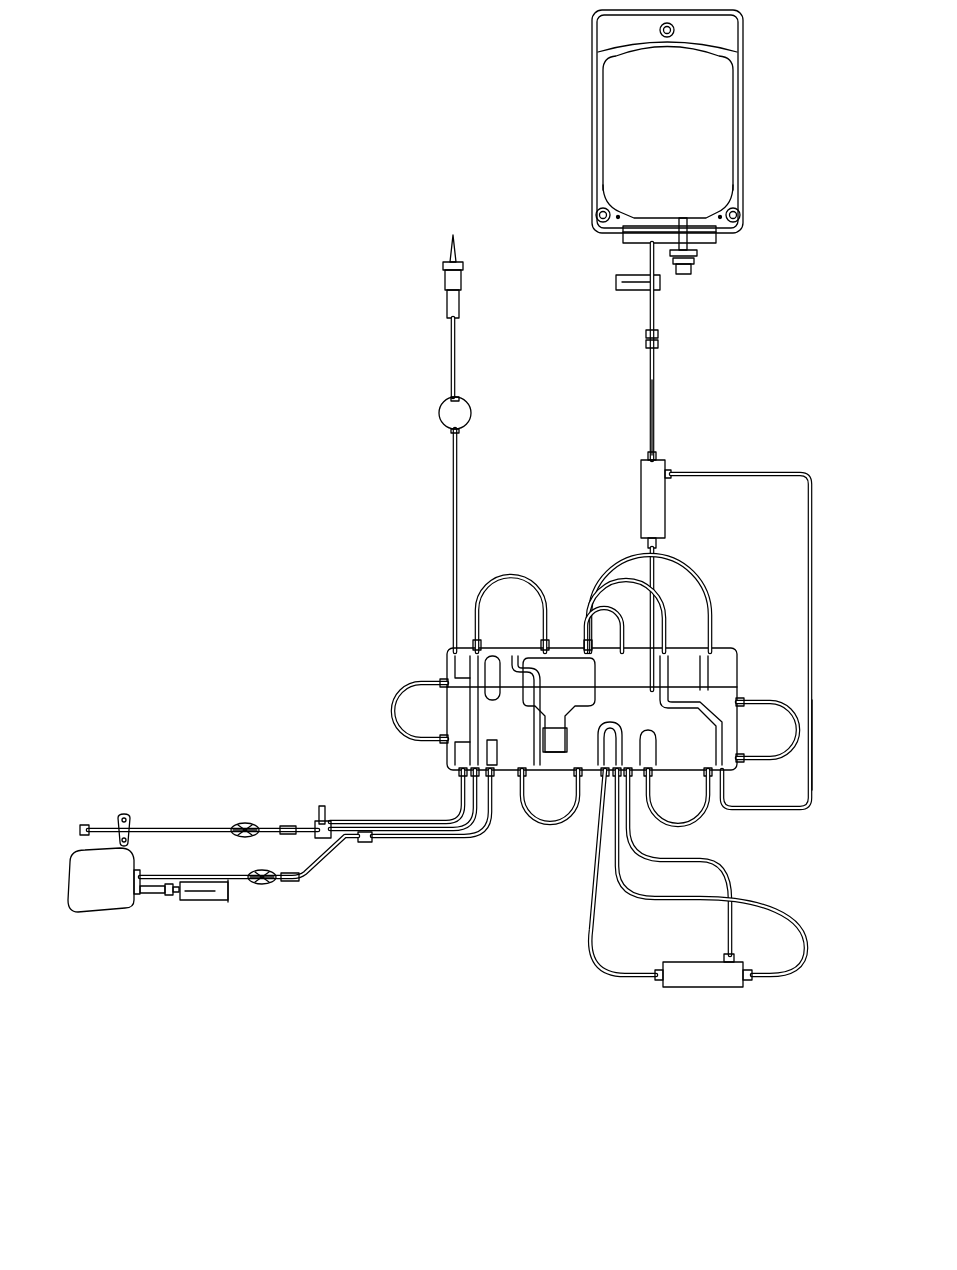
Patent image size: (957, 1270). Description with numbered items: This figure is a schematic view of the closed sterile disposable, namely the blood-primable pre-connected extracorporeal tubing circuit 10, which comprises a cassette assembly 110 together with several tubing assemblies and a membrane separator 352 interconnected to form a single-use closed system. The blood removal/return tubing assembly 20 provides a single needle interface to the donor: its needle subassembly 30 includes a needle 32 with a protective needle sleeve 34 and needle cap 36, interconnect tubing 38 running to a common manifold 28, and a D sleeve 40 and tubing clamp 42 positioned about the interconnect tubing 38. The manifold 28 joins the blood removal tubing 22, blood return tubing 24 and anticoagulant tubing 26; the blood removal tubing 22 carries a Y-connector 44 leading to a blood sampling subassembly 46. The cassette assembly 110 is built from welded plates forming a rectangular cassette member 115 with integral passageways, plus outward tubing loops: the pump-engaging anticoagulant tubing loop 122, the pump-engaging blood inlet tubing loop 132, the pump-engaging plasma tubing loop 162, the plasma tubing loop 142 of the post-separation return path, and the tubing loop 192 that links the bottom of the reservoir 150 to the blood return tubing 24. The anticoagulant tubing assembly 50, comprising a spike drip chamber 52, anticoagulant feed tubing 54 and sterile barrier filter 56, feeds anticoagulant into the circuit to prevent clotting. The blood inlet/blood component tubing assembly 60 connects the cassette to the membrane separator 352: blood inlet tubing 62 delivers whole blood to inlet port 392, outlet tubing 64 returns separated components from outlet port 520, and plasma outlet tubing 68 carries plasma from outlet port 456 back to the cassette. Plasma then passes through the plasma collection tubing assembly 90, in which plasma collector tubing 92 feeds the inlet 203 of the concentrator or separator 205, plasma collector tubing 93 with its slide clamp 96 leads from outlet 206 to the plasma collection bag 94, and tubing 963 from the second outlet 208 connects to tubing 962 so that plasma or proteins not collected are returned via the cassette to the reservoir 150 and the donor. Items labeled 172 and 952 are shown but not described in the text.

The extracorporeal tubing circuit 10 is at (178, 380).
The blood removal/return tubing assembly 20 is at (220, 692).
The blood removal tubing 22 is at (420, 838).
The blood return tubing 24 is at (445, 829).
The anticoagulant tubing 26 is at (452, 818).
The common manifold 28 is at (323, 810).
The needle subassembly 30 is at (190, 803).
The needle 32 is at (100, 826).
The protective needle sleeve 34 is at (88, 825).
The needle cap 36 is at (80, 832).
The interconnect tubing 38 is at (152, 895).
The D sleeve 40 is at (288, 827).
The tubing clamp 42 is at (246, 824).
The Y-connector 44 is at (367, 843).
The blood sampling subassembly 46 is at (207, 913).
The anticoagulant tubing assembly 50 is at (410, 280).
The spike drip chamber 52 is at (445, 288).
The anticoagulant feed tubing 54 is at (448, 492).
The sterile barrier filter 56 is at (438, 418).
The blood inlet/blood component tubing assembly 60 is at (820, 960).
The blood inlet tubing 62 is at (590, 955).
The outlet tubing 64 is at (783, 915).
The plasma outlet tubing 68 is at (730, 880).
The plasma collection tubing assembly 90 is at (678, 352).
The plasma collector tubing 92 is at (656, 584).
The plasma collector tubing 93 is at (648, 375).
The plasma collection bag 94 is at (743, 90).
The slide clamp 96 is at (612, 285).
The cassette assembly 110 is at (362, 730).
The cassette member 115 is at (447, 650).
The anticoagulant tubing loop 122 is at (400, 686).
The blood inlet tubing loop 132 is at (552, 826).
The plasma tubing loop 142 is at (792, 710).
The reservoir 150 is at (548, 690).
The plasma tubing loop 162 is at (680, 825).
The tubing loop 172 is at (590, 600).
The tubing loop 192 is at (480, 588).
The inlet 203 is at (657, 542).
The concentrator or separator 205 is at (641, 500).
The outlet 206 is at (658, 455).
The second outlet 208 is at (672, 477).
The membrane separator 352 is at (685, 988).
The inlet port 392 is at (655, 985).
The outlet port 456 is at (726, 960).
The outlet port 520 is at (748, 986).
The tubing segment 952 is at (582, 351).
The tubing 962 is at (814, 774).
The tubing 963 is at (735, 468).